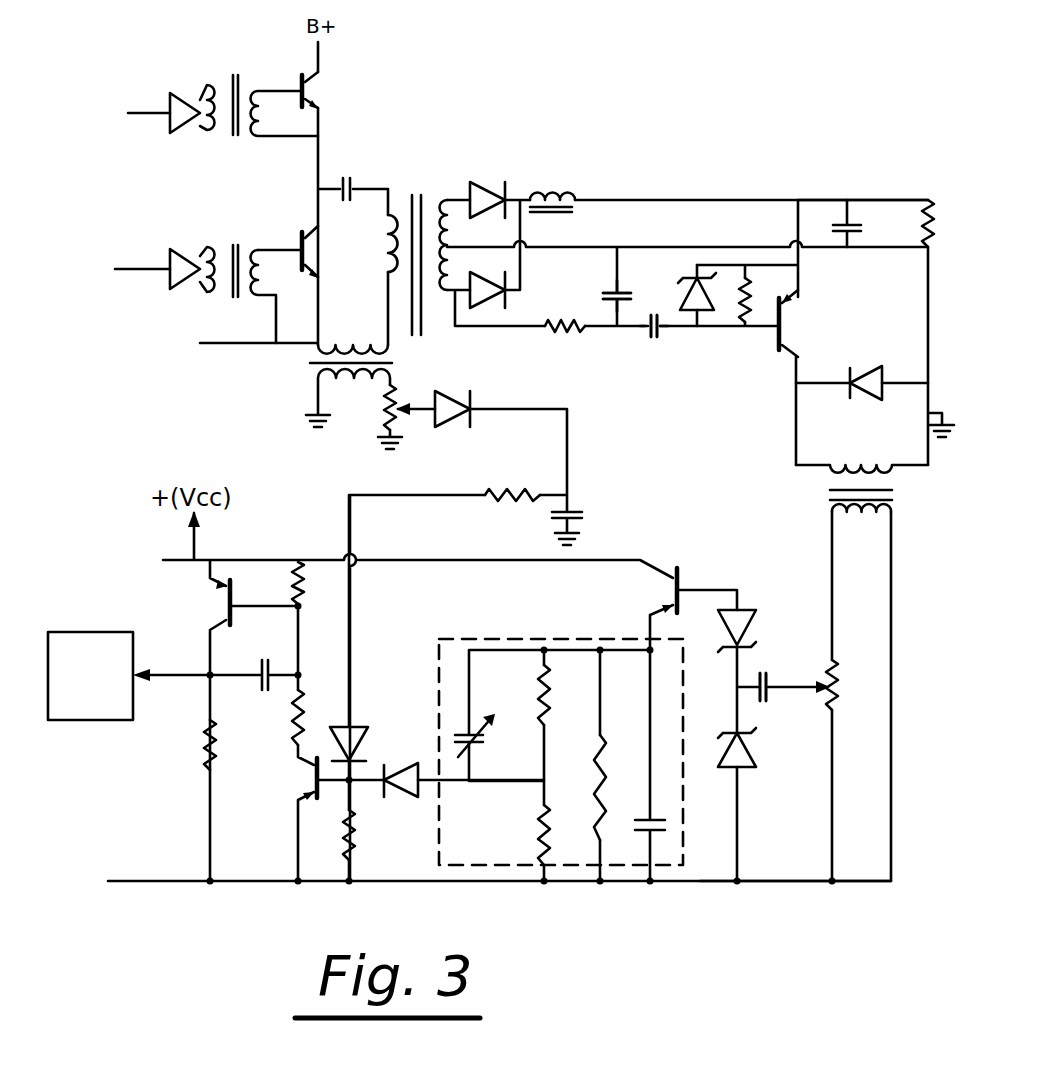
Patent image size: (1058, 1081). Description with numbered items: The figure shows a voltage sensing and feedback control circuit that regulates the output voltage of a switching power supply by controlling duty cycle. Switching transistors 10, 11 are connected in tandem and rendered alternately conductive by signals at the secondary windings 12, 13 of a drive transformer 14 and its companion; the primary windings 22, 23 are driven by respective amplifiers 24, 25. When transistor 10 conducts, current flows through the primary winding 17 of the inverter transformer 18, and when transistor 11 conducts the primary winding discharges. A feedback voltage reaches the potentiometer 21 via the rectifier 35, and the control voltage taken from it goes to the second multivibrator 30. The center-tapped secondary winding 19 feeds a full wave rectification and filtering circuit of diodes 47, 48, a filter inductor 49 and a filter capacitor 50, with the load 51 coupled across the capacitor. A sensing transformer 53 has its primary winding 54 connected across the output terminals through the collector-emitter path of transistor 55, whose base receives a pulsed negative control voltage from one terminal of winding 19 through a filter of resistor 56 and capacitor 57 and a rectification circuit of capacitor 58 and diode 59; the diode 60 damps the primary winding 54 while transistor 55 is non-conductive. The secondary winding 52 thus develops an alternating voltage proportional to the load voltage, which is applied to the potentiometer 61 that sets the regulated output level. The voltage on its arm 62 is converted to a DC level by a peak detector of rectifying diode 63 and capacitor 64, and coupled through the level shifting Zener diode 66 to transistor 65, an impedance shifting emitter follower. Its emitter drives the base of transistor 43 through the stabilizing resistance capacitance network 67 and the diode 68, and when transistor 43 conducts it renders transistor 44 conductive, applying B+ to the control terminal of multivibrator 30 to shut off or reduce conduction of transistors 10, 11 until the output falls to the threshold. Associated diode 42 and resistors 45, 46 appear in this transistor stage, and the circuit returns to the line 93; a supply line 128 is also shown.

The switching transistor 10 is at (306, 90).
The switching transistor 11 is at (308, 250).
The secondary winding 12 is at (300, 138).
The secondary winding 13 is at (256, 258).
The drive transformer 14 is at (236, 142).
The primary winding 17 is at (354, 289).
The inverter transformer 18 is at (412, 215).
The secondary winding 19 is at (436, 200).
The potentiometer 21 is at (388, 405).
The primary winding 22 is at (204, 92).
The primary winding 23 is at (222, 257).
The amplifier 24 is at (175, 96).
The amplifier 25 is at (172, 254).
The second multivibrator 30 is at (133, 648).
The rectifier 35 is at (470, 404).
The diode 42 is at (358, 724).
The transistor 43 is at (312, 780).
The transistor 44 is at (226, 600).
The resistor 45 is at (296, 712).
The resistor 46 is at (300, 580).
The diode 47 is at (475, 180).
The diode 48 is at (487, 272).
The filter inductor 49 is at (564, 184).
The filter capacitor 50 is at (840, 230).
The load 51 is at (926, 228).
The secondary winding 52 is at (832, 520).
The sensing transformer 53 is at (830, 490).
The primary winding 54 is at (860, 467).
The transistor 55 is at (782, 327).
The resistor 56 is at (565, 338).
The capacitor 57 is at (624, 298).
The capacitor 58 is at (659, 332).
The diode 59 is at (683, 297).
The diode 60 is at (856, 375).
The potentiometer 61 is at (836, 683).
The arm 62 is at (802, 698).
The rectifying diode 63 is at (752, 750).
The capacitor 64 is at (763, 672).
The transistor 65 is at (672, 585).
The level shifting Zener diode 66 is at (752, 630).
The stabilizing resistance capacitance network 67 is at (561, 739).
The diode 68 is at (388, 797).
The line 93 is at (742, 885).
The supply line 128 is at (872, 200).